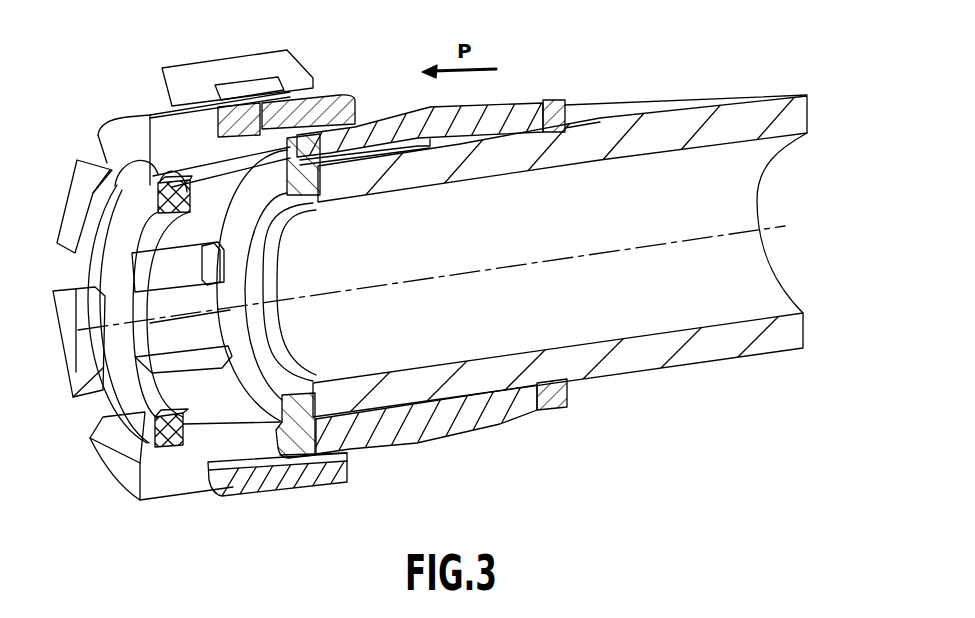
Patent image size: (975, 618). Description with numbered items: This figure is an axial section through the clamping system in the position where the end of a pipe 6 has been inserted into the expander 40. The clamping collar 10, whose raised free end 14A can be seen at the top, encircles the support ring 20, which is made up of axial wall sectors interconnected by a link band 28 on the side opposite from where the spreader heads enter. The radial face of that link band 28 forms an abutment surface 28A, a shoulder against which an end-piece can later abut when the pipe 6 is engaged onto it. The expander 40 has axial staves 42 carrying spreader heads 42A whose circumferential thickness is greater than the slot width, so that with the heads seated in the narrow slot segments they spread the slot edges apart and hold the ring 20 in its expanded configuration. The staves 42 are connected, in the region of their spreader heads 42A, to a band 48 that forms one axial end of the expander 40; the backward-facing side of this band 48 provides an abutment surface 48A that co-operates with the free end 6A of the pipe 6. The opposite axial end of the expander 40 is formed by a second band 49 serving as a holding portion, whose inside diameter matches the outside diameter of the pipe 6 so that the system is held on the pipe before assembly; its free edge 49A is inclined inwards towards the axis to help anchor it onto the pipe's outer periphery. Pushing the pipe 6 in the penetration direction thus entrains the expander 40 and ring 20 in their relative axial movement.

The pipe 6 is at (740, 123).
The free end of the pipe 6A is at (283, 210).
The clamping collar 10 is at (326, 87).
The free end of the end portion 14A is at (233, 67).
The support ring 20 is at (100, 118).
The link band 28 is at (137, 388).
The abutment surface 28A is at (93, 268).
The expander 40 is at (518, 100).
The axial stave 42 is at (409, 454).
The spreader head 42A is at (313, 440).
The band 48 is at (262, 342).
The abutment surface 48A is at (273, 275).
The holding portion (second band) 49 is at (558, 113).
The free edge of the band 49A is at (590, 130).